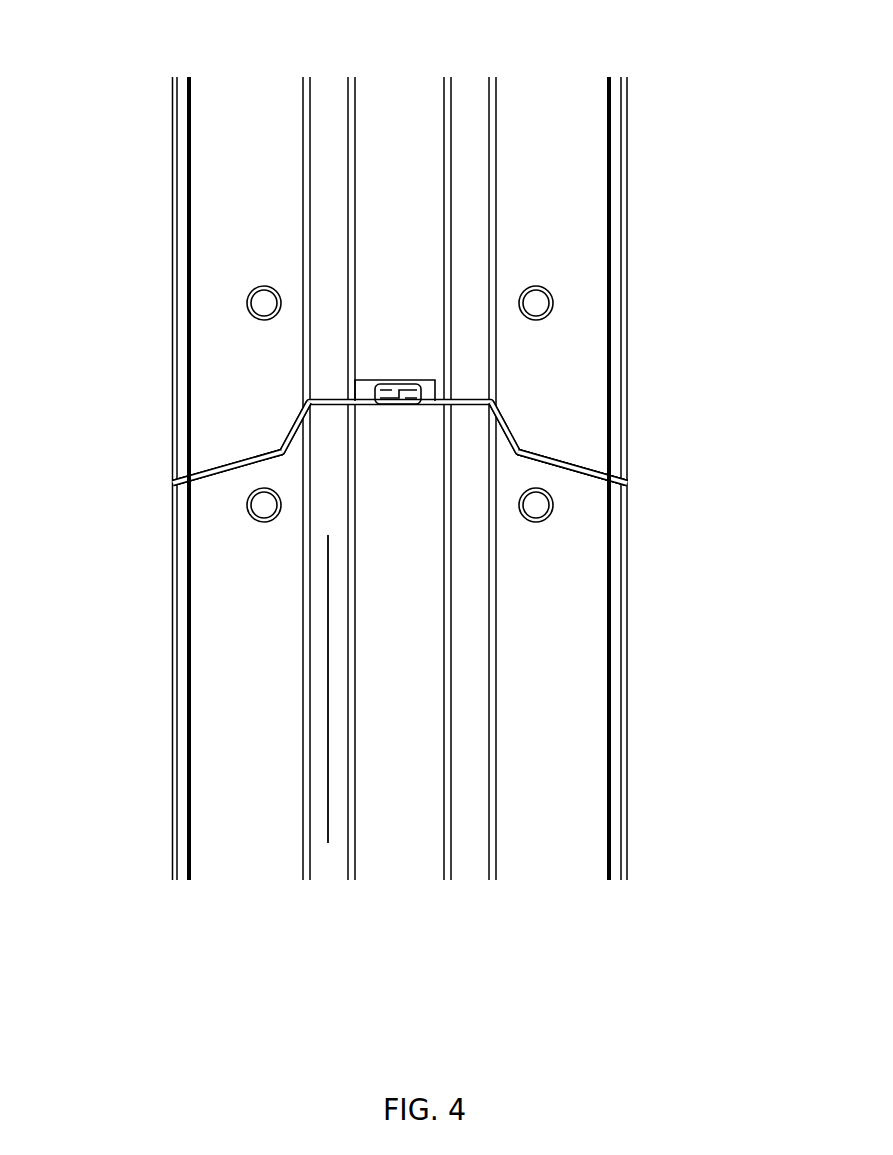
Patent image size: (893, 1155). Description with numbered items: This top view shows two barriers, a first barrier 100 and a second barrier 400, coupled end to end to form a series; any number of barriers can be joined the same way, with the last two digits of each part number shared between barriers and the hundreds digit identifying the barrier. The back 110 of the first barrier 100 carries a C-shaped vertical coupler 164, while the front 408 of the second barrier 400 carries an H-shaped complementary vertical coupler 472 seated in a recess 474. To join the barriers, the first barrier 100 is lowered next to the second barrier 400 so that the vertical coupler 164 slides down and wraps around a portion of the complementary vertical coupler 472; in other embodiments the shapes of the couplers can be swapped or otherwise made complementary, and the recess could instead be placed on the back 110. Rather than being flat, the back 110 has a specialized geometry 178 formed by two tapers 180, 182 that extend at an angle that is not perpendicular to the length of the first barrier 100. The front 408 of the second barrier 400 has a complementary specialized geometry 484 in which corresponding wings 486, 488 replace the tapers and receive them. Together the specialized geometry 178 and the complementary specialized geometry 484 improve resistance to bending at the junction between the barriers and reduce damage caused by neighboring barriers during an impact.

The first barrier 100 is at (248, 832).
The back 110 is at (233, 596).
The vertical coupler 164 is at (362, 399).
The specialized geometry 178 is at (560, 475).
The taper 180 is at (222, 482).
The taper 182 is at (588, 485).
The second barrier 400 is at (582, 157).
The front 408 is at (582, 388).
The complementary vertical coupler 472 is at (410, 385).
The recess 474 is at (365, 385).
The complementary specialized geometry 484 is at (583, 462).
The wing 486 is at (573, 450).
The wing 488 is at (207, 460).